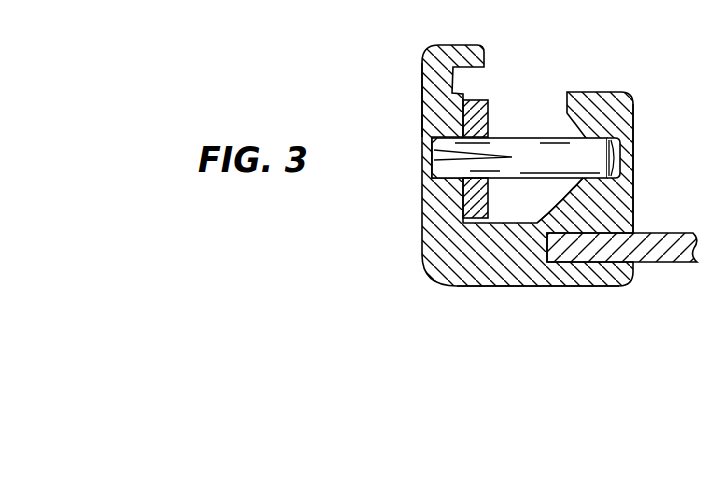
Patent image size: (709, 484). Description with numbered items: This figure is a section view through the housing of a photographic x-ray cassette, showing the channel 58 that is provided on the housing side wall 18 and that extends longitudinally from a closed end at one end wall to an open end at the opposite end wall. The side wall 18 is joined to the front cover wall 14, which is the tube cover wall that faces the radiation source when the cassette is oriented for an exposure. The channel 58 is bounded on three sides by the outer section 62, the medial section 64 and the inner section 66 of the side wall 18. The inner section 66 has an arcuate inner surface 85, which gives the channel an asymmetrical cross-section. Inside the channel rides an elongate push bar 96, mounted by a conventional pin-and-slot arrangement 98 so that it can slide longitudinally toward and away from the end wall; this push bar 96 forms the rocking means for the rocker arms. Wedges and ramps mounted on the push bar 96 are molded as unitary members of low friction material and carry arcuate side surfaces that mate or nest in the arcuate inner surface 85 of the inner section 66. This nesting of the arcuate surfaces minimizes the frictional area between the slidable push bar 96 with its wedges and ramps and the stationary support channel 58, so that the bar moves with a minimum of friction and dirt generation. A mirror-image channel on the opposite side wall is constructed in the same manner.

The front cover wall 14 is at (658, 233).
The side wall 18 is at (410, 108).
The channel 58 is at (558, 56).
The outer section 62 is at (440, 190).
The medial section 64 is at (484, 276).
The inner section 66 is at (636, 131).
The arcuate inner surface 85 is at (625, 199).
The push bar 96 is at (490, 198).
The pin-and-slot arrangement 98 is at (490, 136).